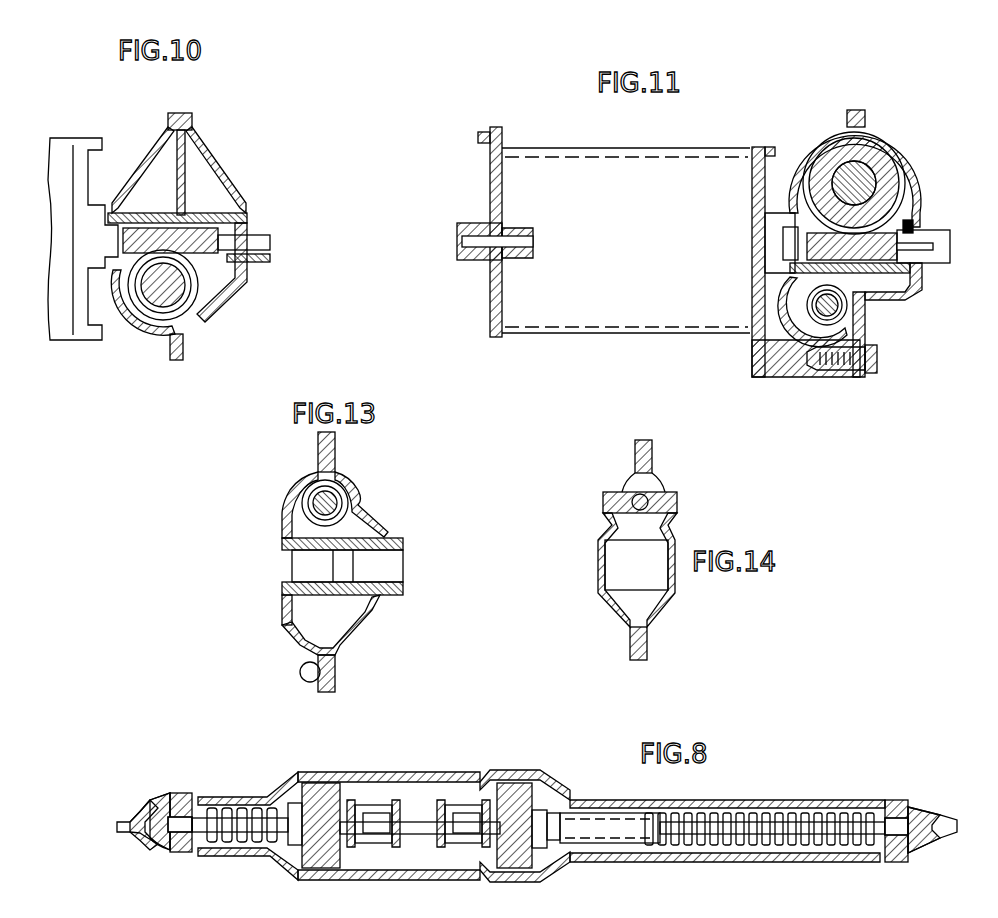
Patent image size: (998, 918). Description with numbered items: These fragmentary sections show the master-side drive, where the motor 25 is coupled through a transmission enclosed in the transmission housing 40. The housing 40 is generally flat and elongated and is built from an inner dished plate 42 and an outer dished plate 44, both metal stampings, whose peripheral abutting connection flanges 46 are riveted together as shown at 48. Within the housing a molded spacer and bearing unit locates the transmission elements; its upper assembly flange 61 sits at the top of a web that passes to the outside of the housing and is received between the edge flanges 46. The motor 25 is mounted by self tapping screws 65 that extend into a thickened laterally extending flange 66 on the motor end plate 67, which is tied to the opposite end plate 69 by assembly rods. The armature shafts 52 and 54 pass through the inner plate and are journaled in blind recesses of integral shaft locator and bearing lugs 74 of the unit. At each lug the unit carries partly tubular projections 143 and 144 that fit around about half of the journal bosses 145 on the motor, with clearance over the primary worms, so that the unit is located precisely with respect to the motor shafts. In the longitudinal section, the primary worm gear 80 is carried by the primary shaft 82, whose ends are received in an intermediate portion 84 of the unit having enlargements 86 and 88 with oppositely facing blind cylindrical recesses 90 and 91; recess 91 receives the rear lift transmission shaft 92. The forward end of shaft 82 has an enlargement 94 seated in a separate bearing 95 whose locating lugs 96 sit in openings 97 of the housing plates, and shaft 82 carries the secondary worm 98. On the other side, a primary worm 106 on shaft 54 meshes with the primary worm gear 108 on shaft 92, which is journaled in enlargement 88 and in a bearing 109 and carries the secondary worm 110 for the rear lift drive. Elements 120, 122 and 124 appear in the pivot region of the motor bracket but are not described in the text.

In FIG. 11, the motor 25 is at (657, 148).
In FIG. 11, the transmission housing 40 is at (896, 128).
In FIG. 8, the inner dished plate 42 is at (672, 862).
In FIG. 13, the outer dished plate 44 is at (350, 635).
In FIG. 14, the outer dished plate 44 is at (615, 628).
In FIG. 8, the outer dished plate 44 is at (573, 795).
In FIG. 10, the peripheral abutting connection flanges 46 is at (170, 130).
In FIG. 13, the peripheral abutting connection flanges 46 is at (336, 455).
In FIG. 14, the peripheral abutting connection flanges 46 is at (665, 630).
In FIG. 8, the peripheral abutting connection flanges 46 is at (120, 822).
In FIG. 13, the rivet 48 is at (300, 680).
In FIG. 10, the armature shaft 52 is at (248, 236).
In FIG. 11, the armature shaft 54 is at (947, 238).
In FIG. 10, the upper assembly flange 61 is at (185, 115).
In FIG. 11, the self tapping screws 65 is at (877, 360).
In FIG. 11, the thickened laterally extending flange 66 is at (790, 377).
In FIG. 11, the end plate 67 is at (768, 158).
In FIG. 11, the end plate 69 is at (490, 325).
In FIG. 10, the shaft locator and bearing lugs 74 is at (252, 263).
In FIG. 11, the shaft locator and bearing lugs 74 is at (925, 268).
In FIG. 8, the primary worm gear 80 is at (332, 783).
In FIG. 8, the primary shaft 82 is at (300, 868).
In FIG. 8, the intermediate portion 84 is at (418, 815).
In FIG. 8, the enlargement 86 is at (372, 803).
In FIG. 8, the enlargement 88 is at (442, 848).
In FIG. 8, the blind cylindrical recess 90 is at (370, 846).
In FIG. 8, the blind cylindrical recess 91 is at (465, 848).
In FIG. 14, the rear lift transmission shaft 92 is at (630, 490).
In FIG. 8, the rear lift transmission shaft 92 is at (568, 812).
In FIG. 8, the enlargement 94 is at (178, 832).
In FIG. 8, the bearing 95 is at (150, 805).
In FIG. 8, the locating lugs 96 is at (180, 793).
In FIG. 8, the openings 97 is at (200, 797).
In FIG. 8, the secondary worm 98 is at (236, 856).
In FIG. 11, the primary worm 106 is at (900, 293).
In FIG. 11, the primary worm gear 108 is at (880, 190).
In FIG. 8, the primary worm gear 108 is at (512, 783).
In FIG. 14, the bearing 109 is at (640, 528).
In FIG. 8, the bearing 109 is at (905, 788).
In FIG. 8, the secondary worm 110 is at (782, 845).
In FIG. 10, the pivot 120 is at (198, 290).
In FIG. 10, the arc 122 is at (155, 330).
In FIG. 10, the stem 124 is at (195, 318).
In FIG. 10, the partly tubular projection 143 is at (225, 213).
In FIG. 11, the partly tubular projection 144 is at (866, 315).
In FIG. 10, the journal bosses 145 is at (112, 240).
In FIG. 11, the journal bosses 145 is at (780, 262).